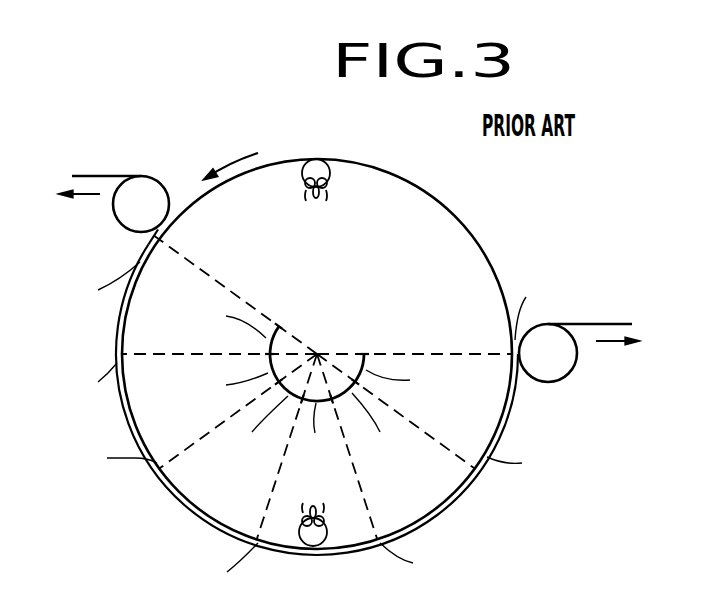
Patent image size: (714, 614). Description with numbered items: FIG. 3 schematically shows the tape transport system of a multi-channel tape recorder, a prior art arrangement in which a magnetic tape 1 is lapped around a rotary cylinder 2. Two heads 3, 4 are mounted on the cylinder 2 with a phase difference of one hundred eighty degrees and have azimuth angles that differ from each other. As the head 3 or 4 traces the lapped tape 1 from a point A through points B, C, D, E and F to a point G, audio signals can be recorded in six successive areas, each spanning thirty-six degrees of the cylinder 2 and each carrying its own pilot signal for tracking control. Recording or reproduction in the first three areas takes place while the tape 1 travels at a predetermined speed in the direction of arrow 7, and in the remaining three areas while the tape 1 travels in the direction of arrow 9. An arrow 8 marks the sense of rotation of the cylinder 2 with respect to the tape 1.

The magnetic tape 1 is at (577, 323).
The rotary cylinder 2 is at (488, 268).
The head 3 is at (330, 177).
The head 4 is at (328, 527).
The arrow 7 is at (607, 346).
The drum rotation direction arrow 8 is at (223, 160).
The arrow 9 is at (92, 200).